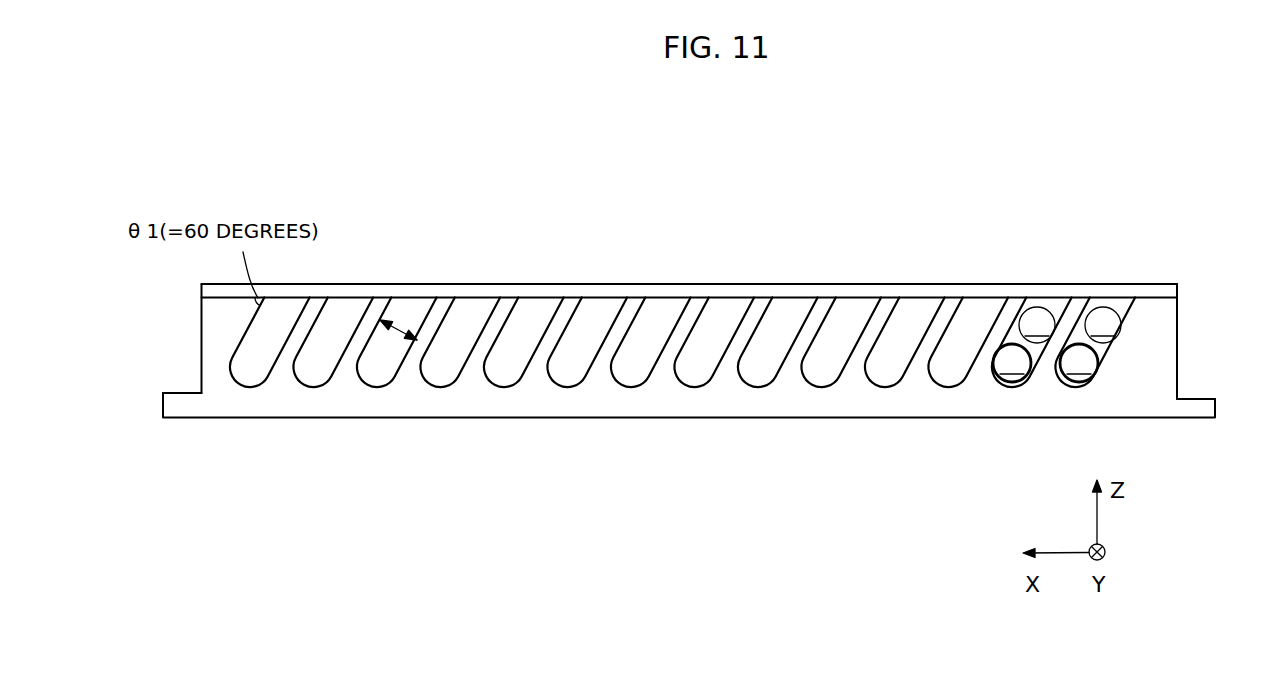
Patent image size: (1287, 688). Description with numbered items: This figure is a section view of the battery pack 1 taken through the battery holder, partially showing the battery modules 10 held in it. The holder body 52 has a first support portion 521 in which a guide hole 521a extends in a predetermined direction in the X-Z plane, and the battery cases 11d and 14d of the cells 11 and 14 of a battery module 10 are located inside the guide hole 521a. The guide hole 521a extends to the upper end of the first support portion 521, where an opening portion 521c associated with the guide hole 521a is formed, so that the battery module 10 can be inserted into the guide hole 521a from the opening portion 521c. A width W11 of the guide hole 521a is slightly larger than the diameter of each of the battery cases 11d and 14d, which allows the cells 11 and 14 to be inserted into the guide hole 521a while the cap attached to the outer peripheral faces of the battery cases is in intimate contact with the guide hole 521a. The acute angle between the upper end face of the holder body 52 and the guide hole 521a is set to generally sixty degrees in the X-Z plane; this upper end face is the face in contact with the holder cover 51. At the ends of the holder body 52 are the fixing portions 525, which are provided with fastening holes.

The battery pack 1 is at (713, 350).
The battery module 10 is at (1071, 348).
The cell 11 is at (1070, 325).
The battery case 11d is at (1037, 311).
The cell 14 is at (1045, 363).
The battery case 14d is at (1025, 380).
The holder cover 51 is at (547, 297).
The holder body 52 is at (624, 422).
The first support portion 521 is at (717, 397).
The guide hole 521a is at (272, 386).
The opening portion 521c is at (347, 304).
The fixing portion 525 is at (177, 408).
The width of the guide hole W11 is at (399, 327).